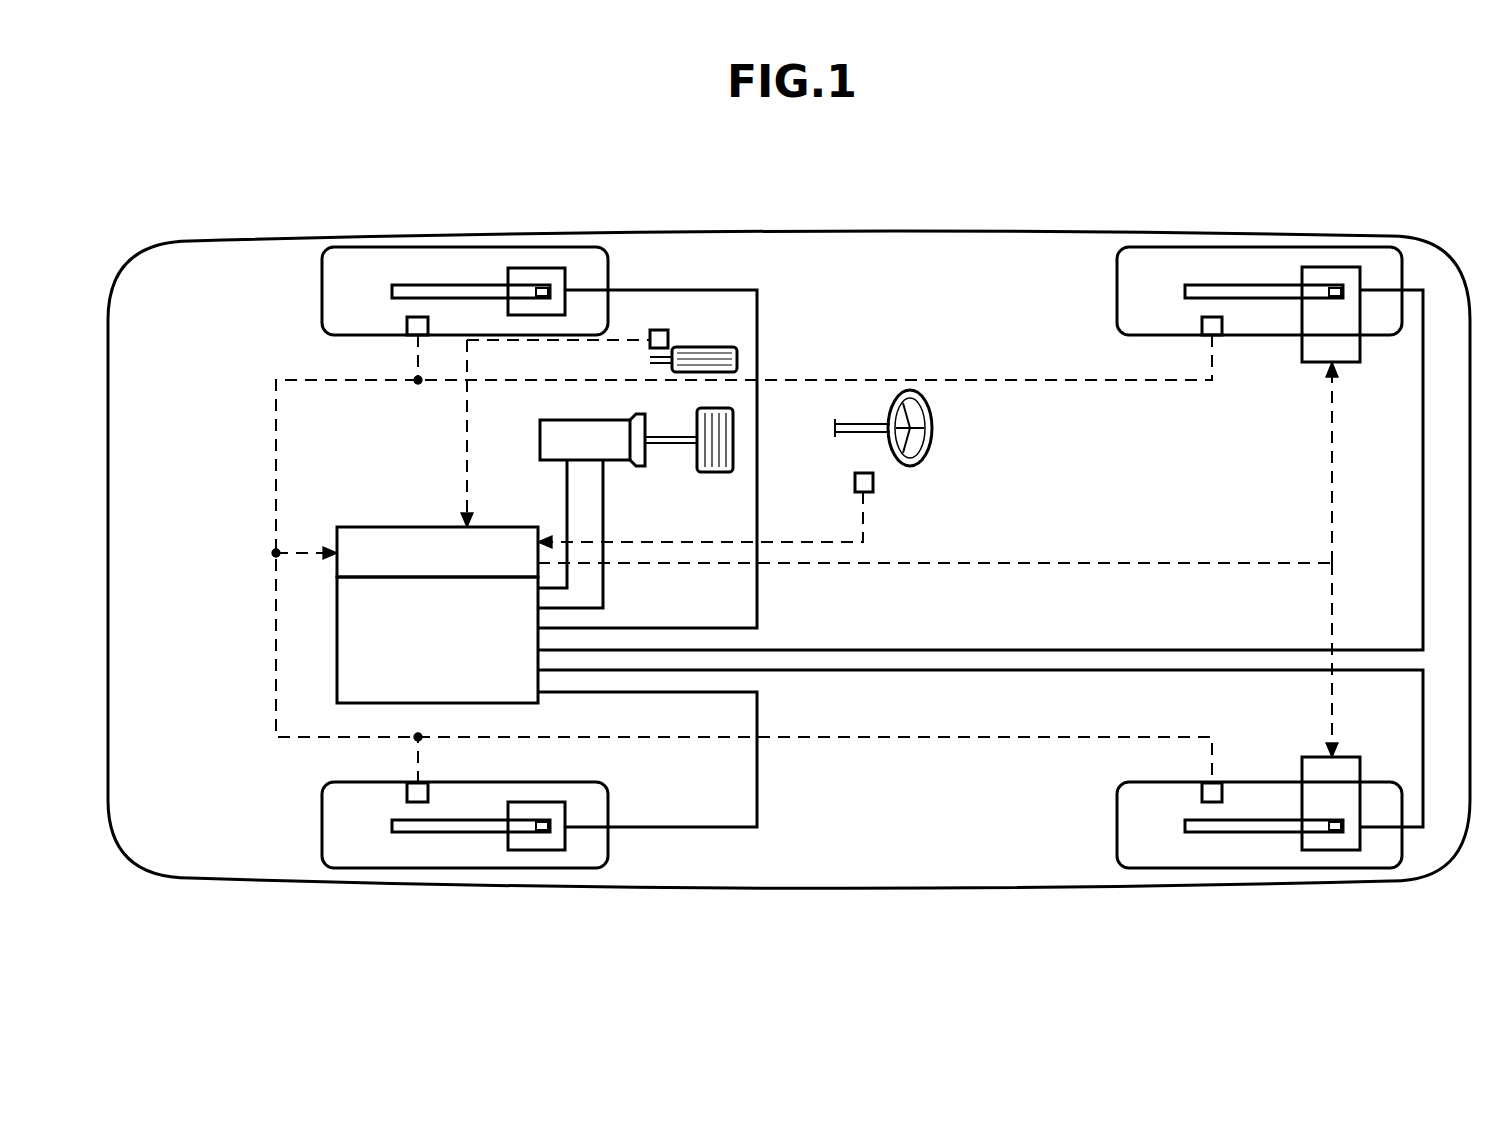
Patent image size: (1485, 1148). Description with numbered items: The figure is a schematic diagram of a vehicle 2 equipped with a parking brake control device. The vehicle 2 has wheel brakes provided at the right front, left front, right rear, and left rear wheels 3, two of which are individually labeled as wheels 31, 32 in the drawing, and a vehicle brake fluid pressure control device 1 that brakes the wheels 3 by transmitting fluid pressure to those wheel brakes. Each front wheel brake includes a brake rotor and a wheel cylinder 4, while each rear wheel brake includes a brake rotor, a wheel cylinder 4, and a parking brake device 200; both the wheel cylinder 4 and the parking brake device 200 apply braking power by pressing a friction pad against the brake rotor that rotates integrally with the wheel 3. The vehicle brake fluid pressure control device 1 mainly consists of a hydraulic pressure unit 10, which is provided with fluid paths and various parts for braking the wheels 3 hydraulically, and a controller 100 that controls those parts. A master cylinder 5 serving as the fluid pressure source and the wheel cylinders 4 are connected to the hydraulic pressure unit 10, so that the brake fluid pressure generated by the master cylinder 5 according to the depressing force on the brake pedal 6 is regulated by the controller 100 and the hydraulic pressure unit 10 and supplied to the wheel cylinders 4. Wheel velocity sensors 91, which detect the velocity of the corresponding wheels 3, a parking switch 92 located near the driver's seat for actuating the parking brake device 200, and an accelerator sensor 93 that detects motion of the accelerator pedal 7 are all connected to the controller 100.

The vehicle brake fluid pressure control device 1 is at (373, 597).
The vehicle 2 is at (924, 212).
The wheel 3 is at (862, 562).
The front wheels 31 is at (472, 254).
The rear wheels 32 is at (1260, 256).
The wheel cylinder 4 is at (538, 268).
The parking brake device 200 is at (1340, 267).
The master cylinder 5 is at (612, 462).
The brake pedal 6 is at (733, 450).
The accelerator pedal 7 is at (737, 355).
The hydraulic pressure unit 10 is at (350, 655).
The controller 100 is at (338, 568).
The wheel velocity sensor 91 is at (414, 336).
The parking switch 92 is at (873, 483).
The accelerator sensor 93 is at (660, 330).